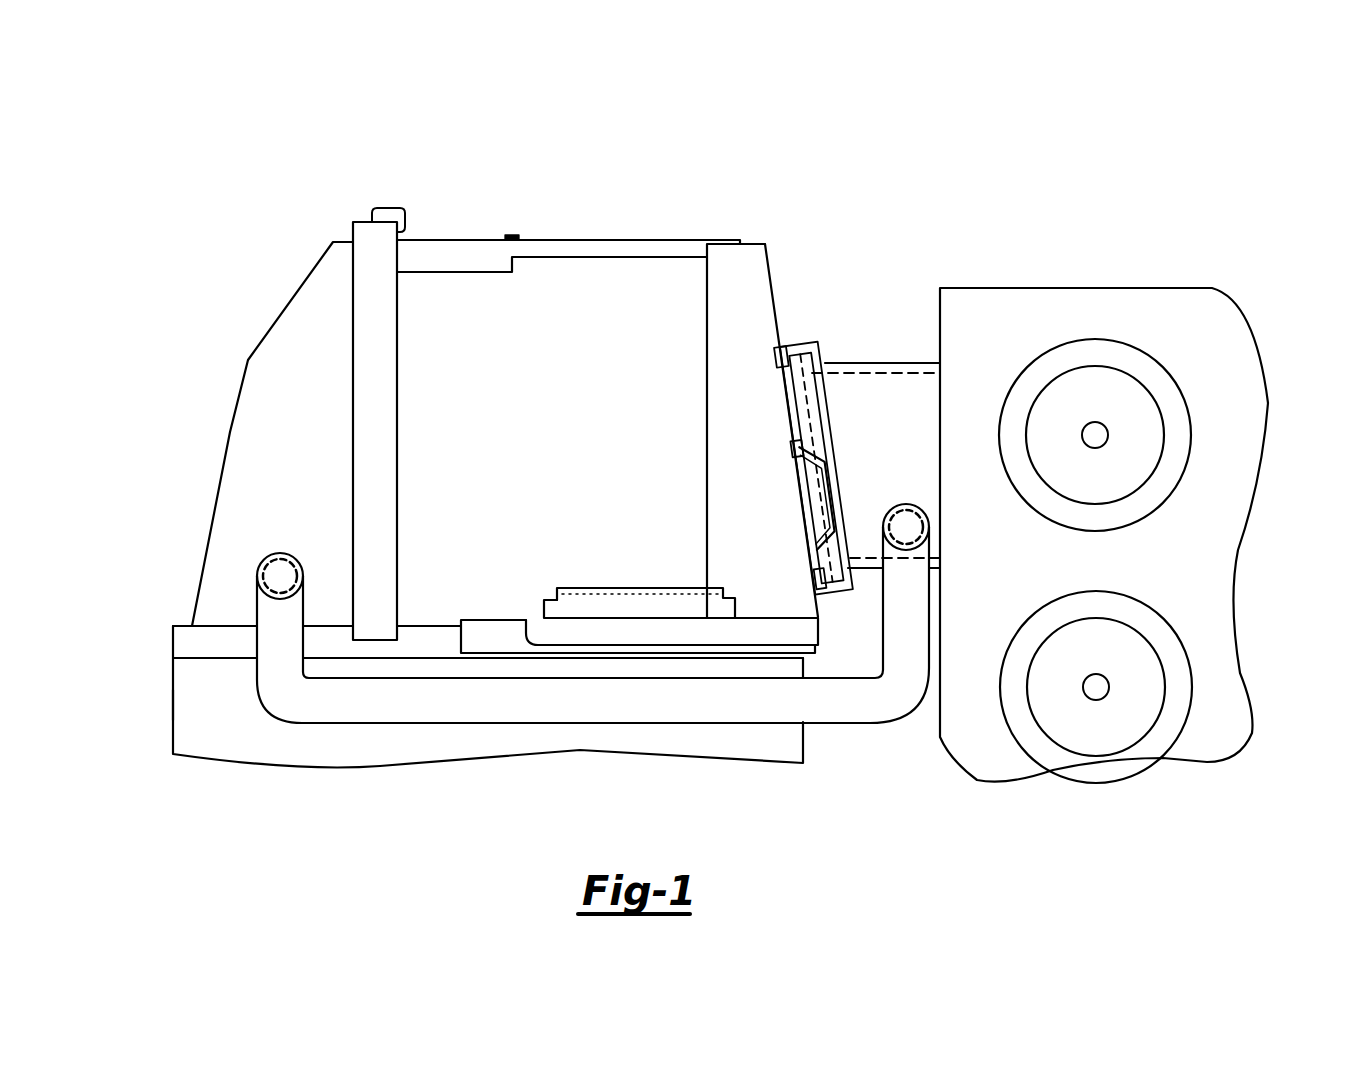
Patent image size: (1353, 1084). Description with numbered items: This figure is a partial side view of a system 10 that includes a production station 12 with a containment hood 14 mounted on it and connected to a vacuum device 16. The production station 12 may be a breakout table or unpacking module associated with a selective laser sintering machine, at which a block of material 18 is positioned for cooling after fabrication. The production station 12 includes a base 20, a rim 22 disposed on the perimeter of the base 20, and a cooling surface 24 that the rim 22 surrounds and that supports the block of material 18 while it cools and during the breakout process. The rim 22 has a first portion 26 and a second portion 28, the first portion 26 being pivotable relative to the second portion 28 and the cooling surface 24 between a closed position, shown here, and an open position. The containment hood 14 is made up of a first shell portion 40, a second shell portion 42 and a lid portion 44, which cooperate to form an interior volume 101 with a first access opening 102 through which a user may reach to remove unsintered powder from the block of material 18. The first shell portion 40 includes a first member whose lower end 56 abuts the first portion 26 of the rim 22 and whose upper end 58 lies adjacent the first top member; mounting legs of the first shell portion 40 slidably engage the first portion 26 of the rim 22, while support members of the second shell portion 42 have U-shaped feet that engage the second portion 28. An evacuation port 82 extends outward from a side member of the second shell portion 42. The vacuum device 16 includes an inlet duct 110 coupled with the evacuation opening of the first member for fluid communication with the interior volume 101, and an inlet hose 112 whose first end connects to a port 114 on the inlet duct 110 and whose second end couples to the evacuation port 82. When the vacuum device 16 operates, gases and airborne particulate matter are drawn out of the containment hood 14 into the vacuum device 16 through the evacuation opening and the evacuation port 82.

The system 10 is at (714, 180).
The production station 12 is at (212, 744).
The containment hood 14 is at (447, 236).
The vacuum device 16 is at (1133, 286).
The block of material 18 is at (607, 588).
The base 20 is at (173, 708).
The rim 22 is at (172, 632).
The cooling surface 24 is at (548, 600).
The first portion 26 is at (477, 622).
The second portion 28 is at (237, 633).
The first shell portion 40 is at (773, 278).
The second shell portion 42 is at (290, 297).
The lid portion 44 is at (648, 236).
The lower end 56 is at (820, 624).
The upper end 58 is at (766, 246).
The evacuation port 82 is at (278, 552).
The interior volume 101 is at (560, 303).
The first access opening 102 is at (396, 415).
The inlet duct 110 is at (887, 363).
The inlet hose 112 is at (862, 710).
The port 114 is at (906, 505).